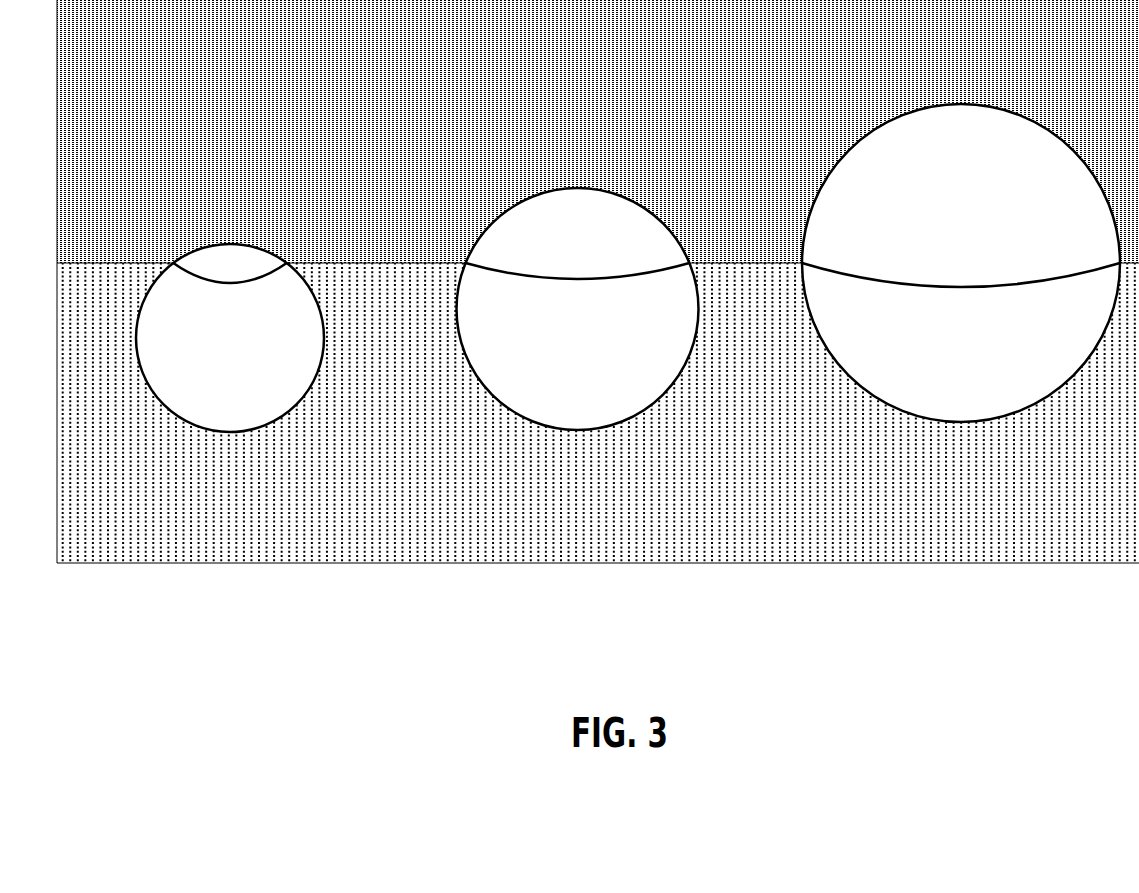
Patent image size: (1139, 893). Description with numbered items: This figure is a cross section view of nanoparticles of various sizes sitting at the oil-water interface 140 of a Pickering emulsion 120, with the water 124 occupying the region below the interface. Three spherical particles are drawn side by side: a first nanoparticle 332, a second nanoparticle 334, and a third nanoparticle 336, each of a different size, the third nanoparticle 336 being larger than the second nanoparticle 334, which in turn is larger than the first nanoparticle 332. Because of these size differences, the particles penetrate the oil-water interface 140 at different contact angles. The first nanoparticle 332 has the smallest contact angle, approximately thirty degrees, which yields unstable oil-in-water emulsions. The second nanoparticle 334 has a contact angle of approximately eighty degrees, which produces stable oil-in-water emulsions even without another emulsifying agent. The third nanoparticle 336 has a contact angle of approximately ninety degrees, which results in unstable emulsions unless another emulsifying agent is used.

The Pickering emulsion 120 is at (108, 47).
The water 124 is at (132, 516).
The oil-water interface 140 is at (364, 244).
The first nanoparticle 332 is at (206, 359).
The second nanoparticle 334 is at (554, 364).
The third nanoparticle 336 is at (947, 366).